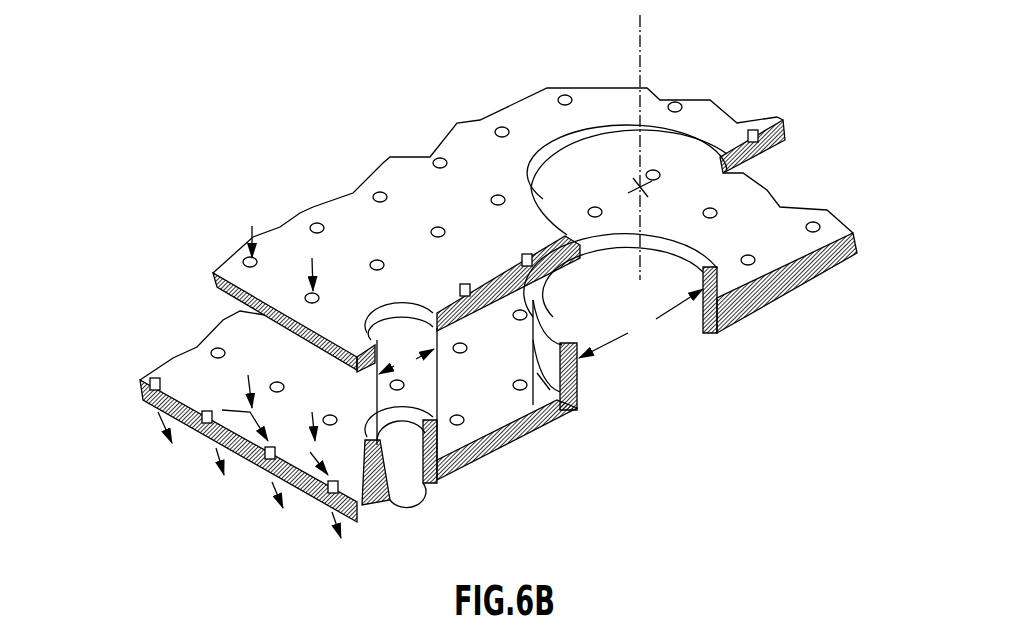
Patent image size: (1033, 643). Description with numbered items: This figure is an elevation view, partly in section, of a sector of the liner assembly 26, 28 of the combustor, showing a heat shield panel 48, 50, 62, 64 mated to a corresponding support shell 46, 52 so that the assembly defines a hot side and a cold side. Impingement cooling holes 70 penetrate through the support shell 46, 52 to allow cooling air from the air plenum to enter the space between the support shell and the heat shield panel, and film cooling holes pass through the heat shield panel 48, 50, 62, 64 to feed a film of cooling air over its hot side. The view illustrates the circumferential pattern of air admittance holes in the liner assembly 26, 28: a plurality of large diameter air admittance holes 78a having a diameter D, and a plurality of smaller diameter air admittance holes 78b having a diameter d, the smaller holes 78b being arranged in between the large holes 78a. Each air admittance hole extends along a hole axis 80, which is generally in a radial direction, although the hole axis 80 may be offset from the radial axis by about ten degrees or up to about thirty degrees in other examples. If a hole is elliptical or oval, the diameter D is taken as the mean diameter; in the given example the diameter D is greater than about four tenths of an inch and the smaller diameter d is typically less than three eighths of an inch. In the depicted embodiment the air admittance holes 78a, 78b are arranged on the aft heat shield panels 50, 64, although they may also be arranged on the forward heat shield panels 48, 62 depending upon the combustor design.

The liner assembly 26 is at (458, 287).
The liner assembly 28 is at (212, 257).
The support shell 46 is at (535, 230).
The support shell 52 is at (378, 174).
The impingement cooling hole 70 is at (300, 300).
The forward heat shield panel 48 is at (318, 418).
The aft heat shield panel 50 is at (318, 418).
The forward heat shield panel 62 is at (318, 418).
The aft heat shield panel 64 is at (223, 317).
The large diameter air admittance hole 78a is at (641, 360).
The smaller diameter air admittance hole 78b is at (410, 495).
The hole axis 80 is at (643, 50).
The diameter D is at (641, 323).
The diameter d is at (406, 360).